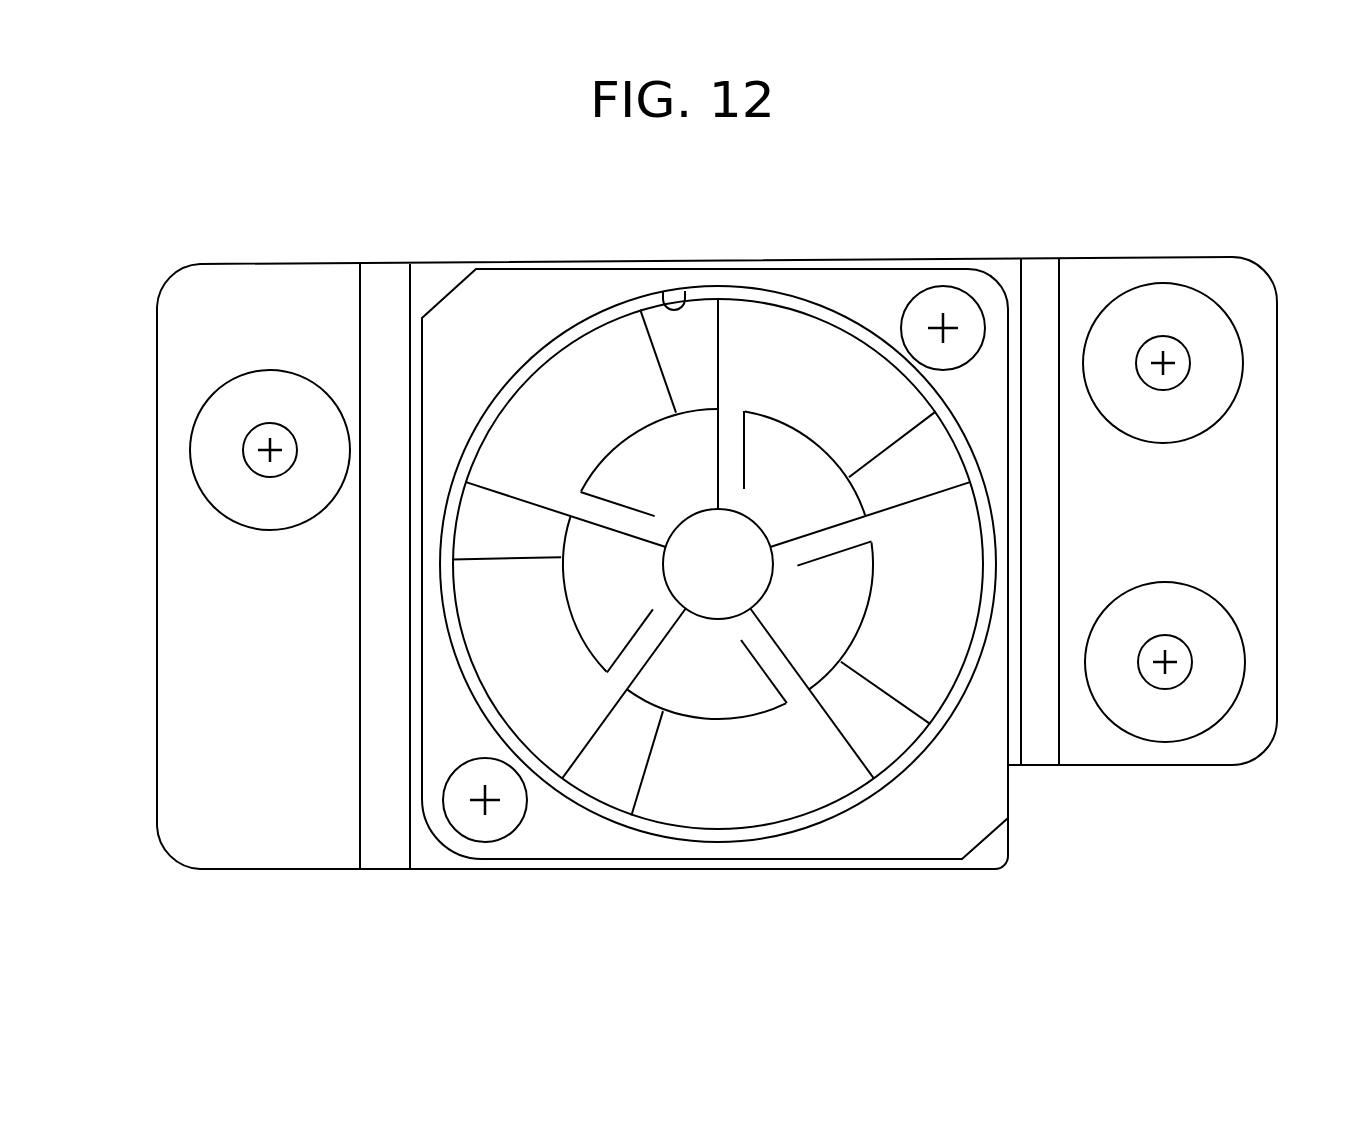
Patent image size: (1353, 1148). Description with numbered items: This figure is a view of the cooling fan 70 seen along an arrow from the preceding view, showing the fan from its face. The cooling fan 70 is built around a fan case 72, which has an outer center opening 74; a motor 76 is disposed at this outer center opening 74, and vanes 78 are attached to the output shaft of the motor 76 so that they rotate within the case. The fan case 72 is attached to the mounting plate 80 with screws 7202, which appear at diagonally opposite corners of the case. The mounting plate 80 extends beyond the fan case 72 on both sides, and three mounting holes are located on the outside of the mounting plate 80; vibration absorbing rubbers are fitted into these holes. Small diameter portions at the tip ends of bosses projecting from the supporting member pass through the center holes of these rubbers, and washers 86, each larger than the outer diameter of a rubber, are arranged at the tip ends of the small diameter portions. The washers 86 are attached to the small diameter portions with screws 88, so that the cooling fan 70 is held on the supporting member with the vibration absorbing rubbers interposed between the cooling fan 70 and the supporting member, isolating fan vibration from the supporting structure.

The cooling fan 70 is at (893, 262).
The fan case 72 is at (505, 306).
The outer center opening 74 is at (674, 307).
The motor 76 is at (710, 587).
The vanes 78 is at (938, 668).
The screws 7202 is at (967, 290).
The mounting plate 80 is at (298, 283).
The washers 86 is at (210, 495).
The screws 88 is at (252, 440).